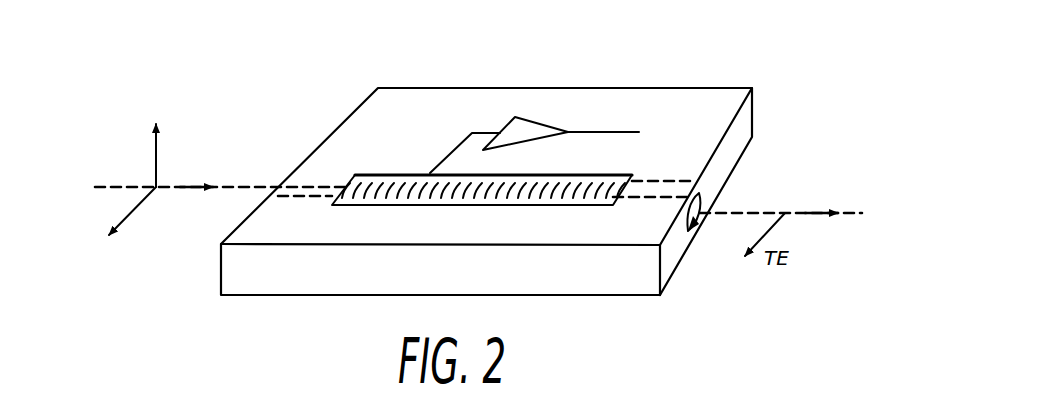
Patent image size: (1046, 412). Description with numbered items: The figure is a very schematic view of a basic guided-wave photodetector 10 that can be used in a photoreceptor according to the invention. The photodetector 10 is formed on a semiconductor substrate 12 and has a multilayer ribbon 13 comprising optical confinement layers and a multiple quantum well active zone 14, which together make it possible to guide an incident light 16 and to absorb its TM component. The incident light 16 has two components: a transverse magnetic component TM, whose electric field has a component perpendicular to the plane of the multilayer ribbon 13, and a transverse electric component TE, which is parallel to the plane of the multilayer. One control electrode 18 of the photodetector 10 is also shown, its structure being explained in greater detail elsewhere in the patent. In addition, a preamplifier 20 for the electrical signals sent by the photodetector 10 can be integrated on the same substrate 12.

The photodetector 10 is at (370, 76).
The semiconductor substrate 12 is at (708, 102).
The multilayer ribbon 13 is at (302, 197).
The multiple quantum well active zone 14 is at (697, 232).
The incident light 16 is at (120, 185).
The control electrode 18 is at (392, 173).
The preamplifier 20 is at (523, 130).